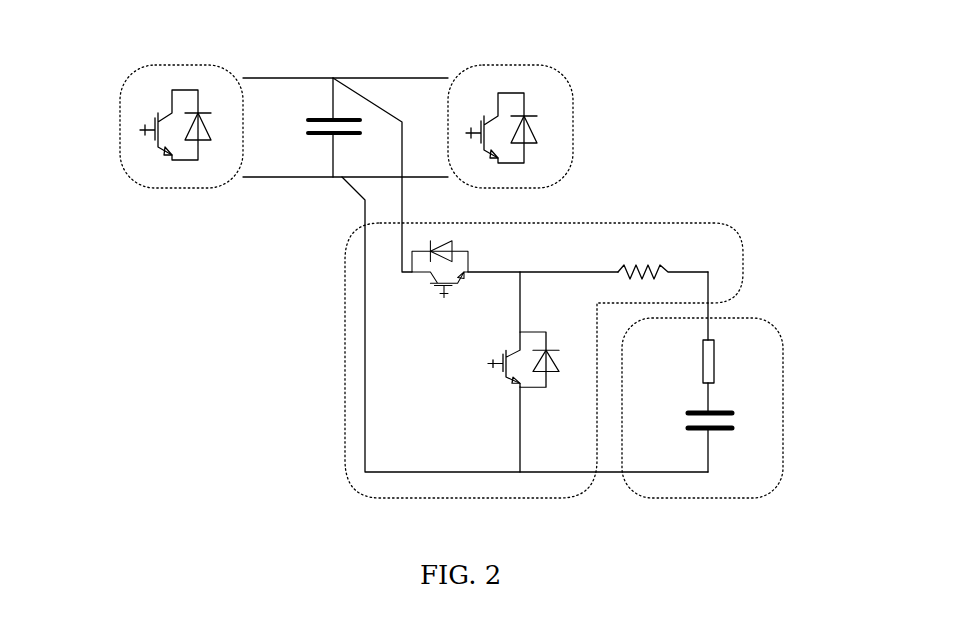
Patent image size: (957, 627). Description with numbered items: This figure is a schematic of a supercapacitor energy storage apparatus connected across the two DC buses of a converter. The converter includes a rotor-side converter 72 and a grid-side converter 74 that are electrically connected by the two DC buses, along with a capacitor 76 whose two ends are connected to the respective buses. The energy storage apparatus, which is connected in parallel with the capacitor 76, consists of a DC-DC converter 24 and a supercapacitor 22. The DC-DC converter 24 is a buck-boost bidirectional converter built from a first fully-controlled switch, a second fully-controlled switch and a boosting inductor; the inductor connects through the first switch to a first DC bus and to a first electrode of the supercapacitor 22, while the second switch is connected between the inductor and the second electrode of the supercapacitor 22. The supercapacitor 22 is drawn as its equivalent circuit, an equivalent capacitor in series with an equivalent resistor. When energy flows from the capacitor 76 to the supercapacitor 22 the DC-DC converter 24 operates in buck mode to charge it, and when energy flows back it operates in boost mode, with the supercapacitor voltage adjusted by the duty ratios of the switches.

The rotor-side converter 72 is at (145, 70).
The grid-side converter 74 is at (562, 80).
The capacitor 76 is at (320, 137).
The DC-DC converter 24 is at (345, 408).
The supercapacitor 22 is at (783, 470).